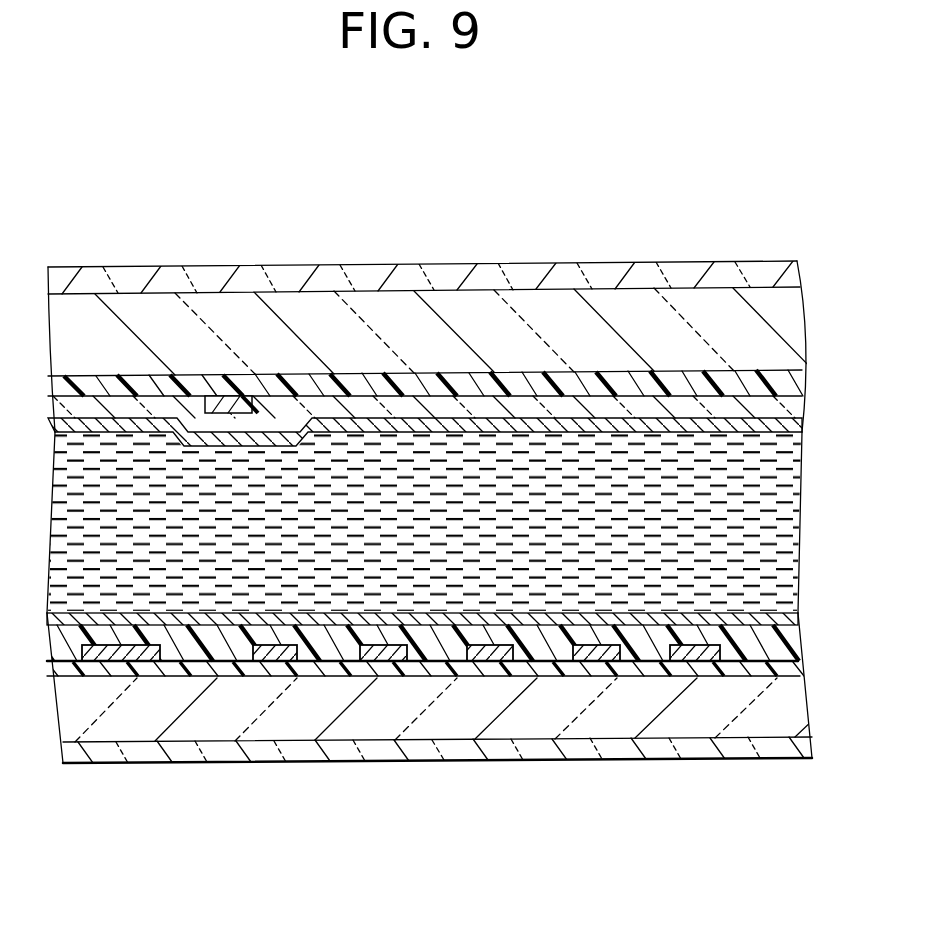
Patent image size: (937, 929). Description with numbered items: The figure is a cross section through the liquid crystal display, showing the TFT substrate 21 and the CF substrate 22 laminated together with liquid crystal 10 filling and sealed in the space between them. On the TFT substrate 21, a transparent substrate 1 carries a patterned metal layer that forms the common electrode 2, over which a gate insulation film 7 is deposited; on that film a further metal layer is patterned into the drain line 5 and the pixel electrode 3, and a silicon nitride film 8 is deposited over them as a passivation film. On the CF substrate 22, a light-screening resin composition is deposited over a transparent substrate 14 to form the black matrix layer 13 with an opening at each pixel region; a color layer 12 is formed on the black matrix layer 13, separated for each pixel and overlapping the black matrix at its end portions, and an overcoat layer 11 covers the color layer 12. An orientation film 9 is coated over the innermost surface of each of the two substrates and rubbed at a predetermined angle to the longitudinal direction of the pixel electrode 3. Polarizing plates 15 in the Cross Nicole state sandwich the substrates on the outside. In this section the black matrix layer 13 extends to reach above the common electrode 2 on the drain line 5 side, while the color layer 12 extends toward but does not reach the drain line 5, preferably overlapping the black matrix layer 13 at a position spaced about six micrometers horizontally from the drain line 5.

The transparent substrate 1 is at (705, 724).
The common electrode 2 is at (493, 662).
The pixel electrode 3 is at (598, 654).
The drain line 5 is at (123, 660).
The gate insulation film 7 is at (650, 664).
The silicon nitride film 8 is at (423, 652).
The orientation film 9 is at (716, 420).
The liquid crystal 10 is at (661, 440).
The overcoat layer 11 is at (530, 405).
The color layer 12 is at (468, 365).
The black matrix layer 13 is at (203, 398).
The transparent substrate 14 is at (358, 305).
The polarizing plate 15 is at (102, 267).
The TFT substrate 21 is at (808, 767).
The CF substrate 22 is at (772, 238).